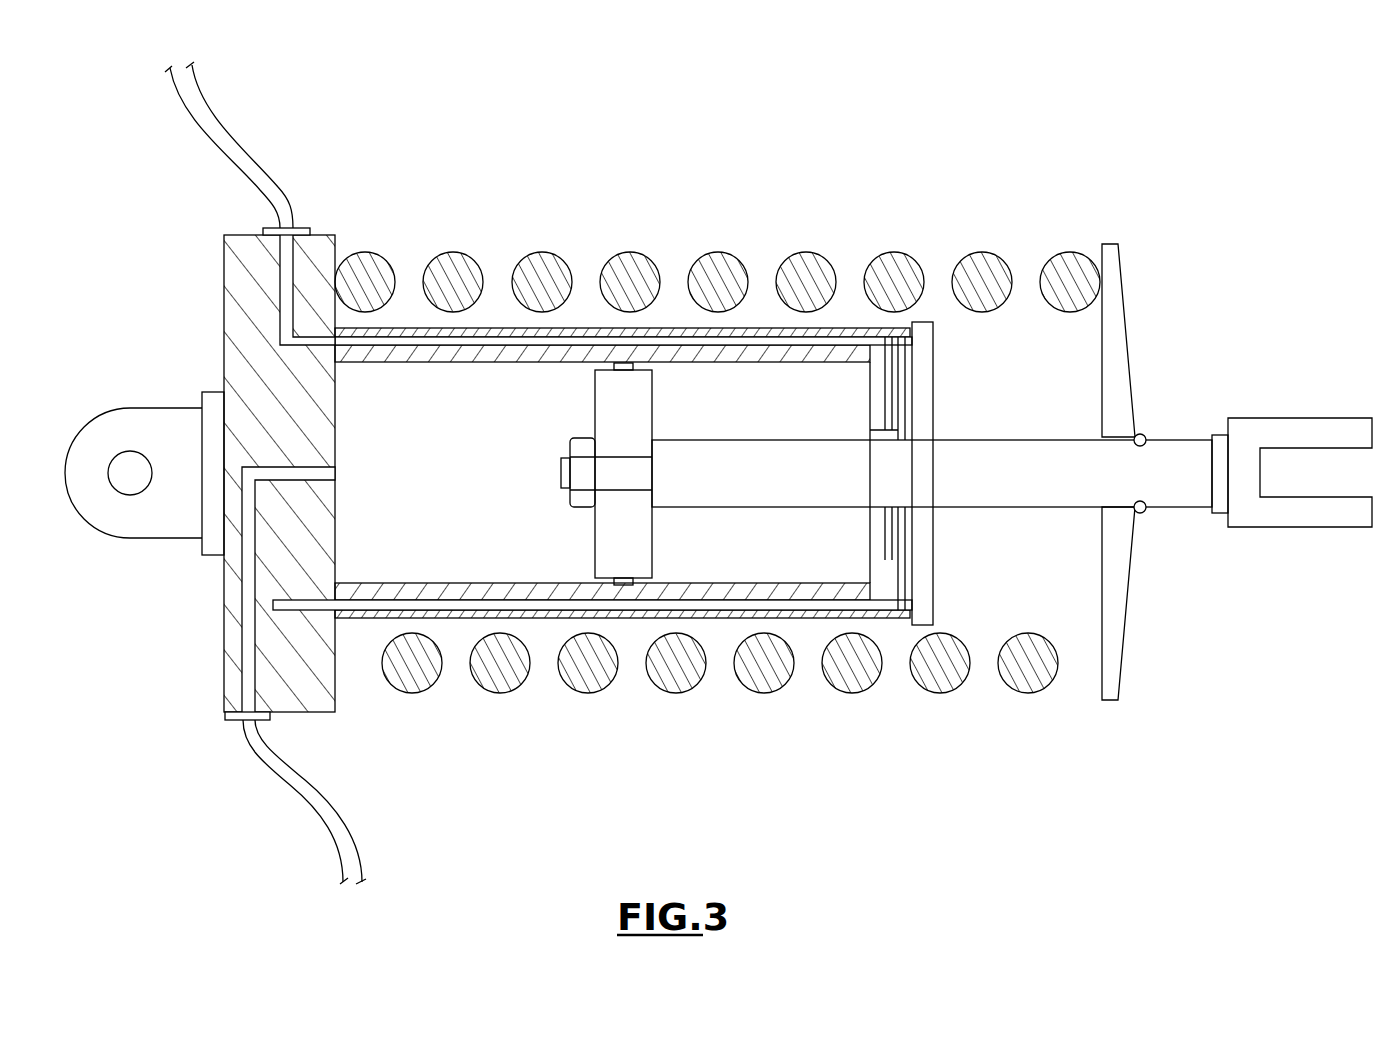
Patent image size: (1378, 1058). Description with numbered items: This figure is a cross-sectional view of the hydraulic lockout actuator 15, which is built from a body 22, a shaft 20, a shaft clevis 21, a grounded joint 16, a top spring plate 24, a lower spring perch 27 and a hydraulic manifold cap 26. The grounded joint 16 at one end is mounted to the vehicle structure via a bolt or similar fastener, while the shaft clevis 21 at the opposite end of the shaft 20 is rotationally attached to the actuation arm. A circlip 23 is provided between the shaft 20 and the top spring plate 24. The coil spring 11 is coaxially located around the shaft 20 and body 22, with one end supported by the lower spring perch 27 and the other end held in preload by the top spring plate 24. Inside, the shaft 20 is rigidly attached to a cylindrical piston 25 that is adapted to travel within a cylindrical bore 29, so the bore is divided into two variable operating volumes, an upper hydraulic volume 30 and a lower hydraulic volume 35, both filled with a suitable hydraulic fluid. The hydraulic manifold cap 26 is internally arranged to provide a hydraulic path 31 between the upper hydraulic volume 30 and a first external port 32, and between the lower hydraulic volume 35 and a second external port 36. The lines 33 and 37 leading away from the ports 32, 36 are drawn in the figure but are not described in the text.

The coil spring 11 is at (536, 265).
The hydraulic lockout actuator 15 is at (718, 473).
The grounded joint 16 is at (130, 522).
The shaft 20 is at (1037, 492).
The shaft clevis 21 is at (1275, 432).
The body 22 is at (898, 620).
The circlip 23 is at (1142, 513).
The top spring plate 24 is at (1118, 372).
The cylindrical piston 25 is at (612, 542).
The hydraulic manifold cap 26 is at (245, 372).
The lower spring perch 27 is at (577, 469).
The cylindrical bore 29 is at (830, 355).
The upper hydraulic volume 30 is at (805, 545).
The hydraulic path 31 is at (745, 340).
The first external port 32 is at (305, 228).
The upper cable 33 is at (226, 164).
The lower hydraulic volume 35 is at (441, 517).
The second external port 36 is at (250, 722).
The lower cable 37 is at (333, 815).